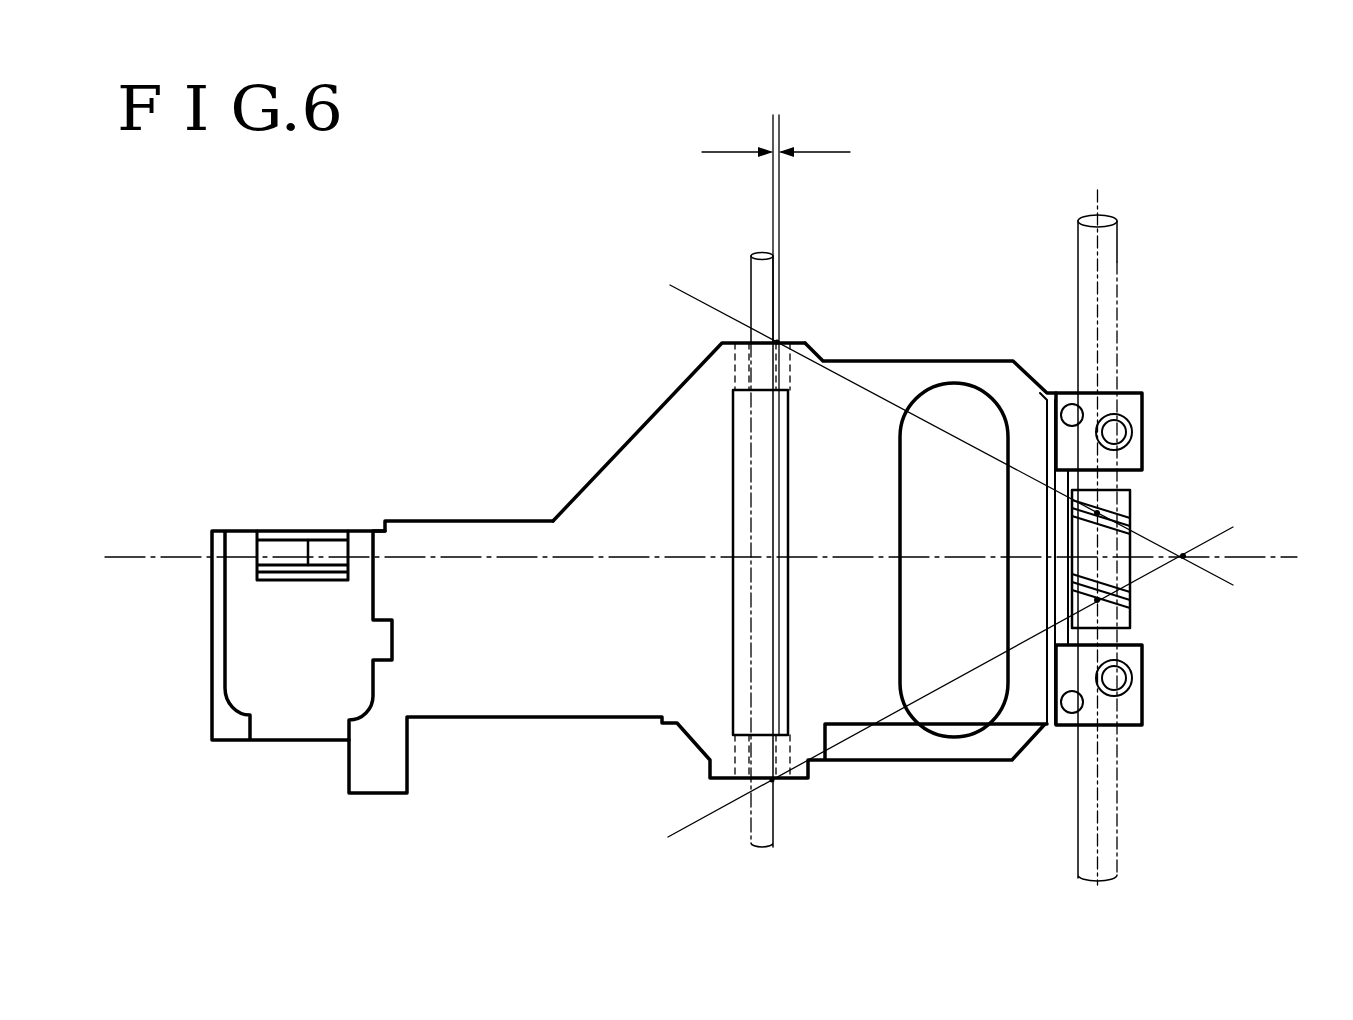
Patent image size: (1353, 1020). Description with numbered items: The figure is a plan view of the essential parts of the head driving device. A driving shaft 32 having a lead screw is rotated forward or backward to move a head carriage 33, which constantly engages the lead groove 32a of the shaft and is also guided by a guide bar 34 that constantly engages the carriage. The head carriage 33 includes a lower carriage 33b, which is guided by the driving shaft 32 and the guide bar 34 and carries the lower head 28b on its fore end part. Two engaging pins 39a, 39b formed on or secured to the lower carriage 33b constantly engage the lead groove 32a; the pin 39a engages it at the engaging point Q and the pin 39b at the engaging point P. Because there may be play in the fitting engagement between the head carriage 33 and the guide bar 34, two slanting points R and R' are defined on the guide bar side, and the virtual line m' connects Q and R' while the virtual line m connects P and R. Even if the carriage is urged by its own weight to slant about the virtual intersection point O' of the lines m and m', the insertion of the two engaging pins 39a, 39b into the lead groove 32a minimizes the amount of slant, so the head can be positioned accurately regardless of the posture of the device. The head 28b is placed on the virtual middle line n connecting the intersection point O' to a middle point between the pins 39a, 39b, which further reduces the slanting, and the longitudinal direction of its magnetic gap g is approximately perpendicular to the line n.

The lower head 28b is at (280, 548).
The magnetic gap g is at (310, 553).
The head carriage 33 is at (595, 717).
The lower carriage 33b is at (635, 488).
The guide bar 34 is at (751, 280).
The driving shaft 32 is at (1117, 242).
The lead groove 32a is at (1130, 527).
The engaging pin 39a is at (1130, 605).
The engaging pin 39b is at (1130, 482).
The virtual middle line n is at (598, 560).
The virtual line m is at (951, 425).
The virtual line m' is at (950, 692).
The slanting point R is at (806, 292).
The slanting point R' is at (794, 832).
The engaging point P is at (1099, 513).
The engaging point Q is at (1099, 600).
The virtual intersection point O' is at (1242, 527).